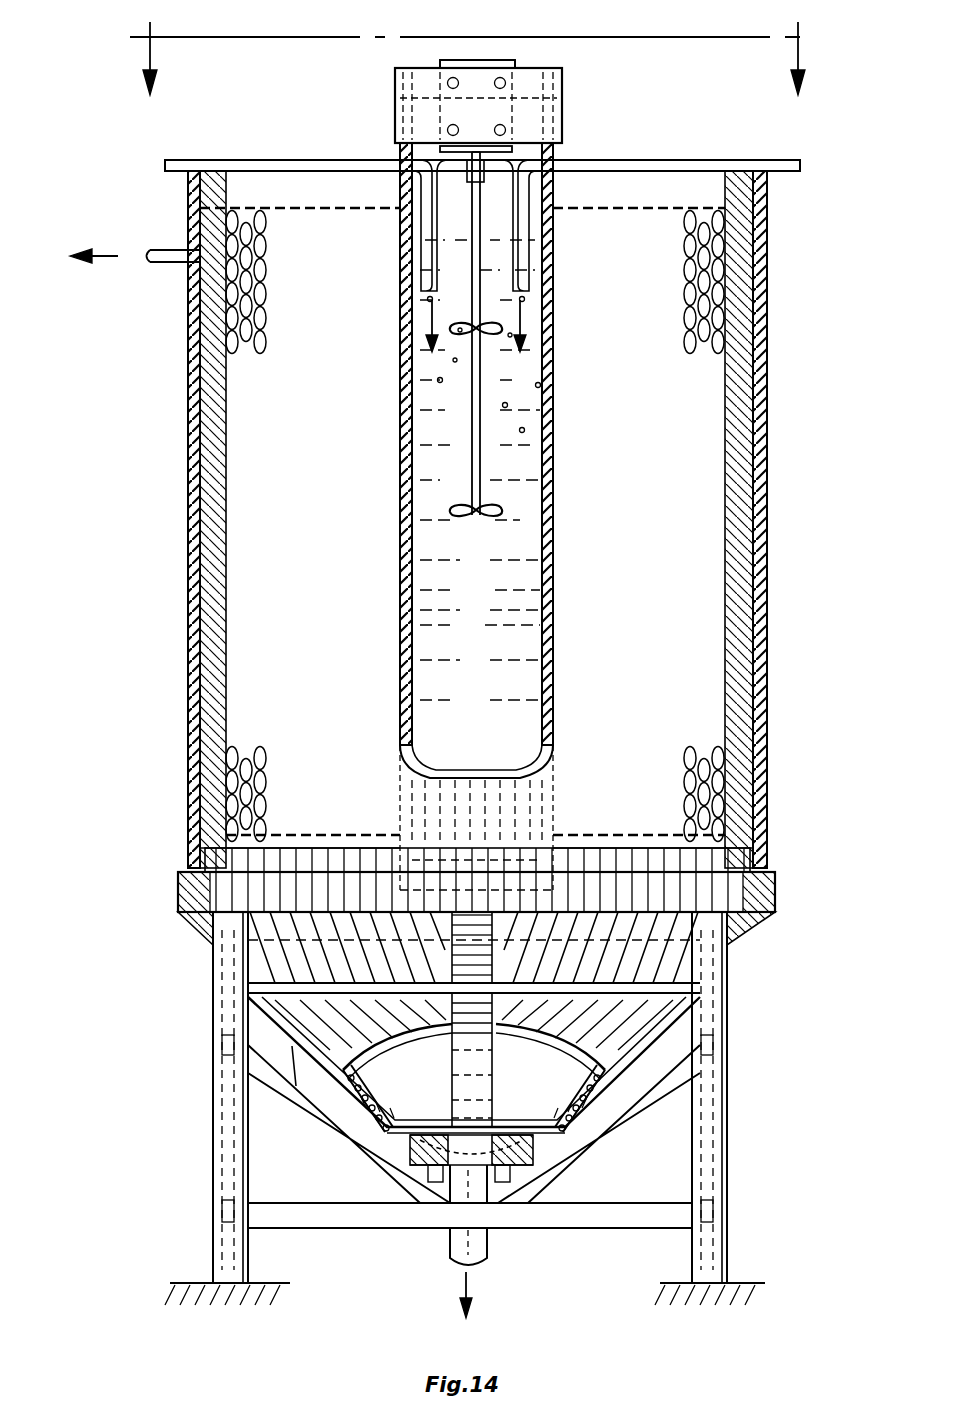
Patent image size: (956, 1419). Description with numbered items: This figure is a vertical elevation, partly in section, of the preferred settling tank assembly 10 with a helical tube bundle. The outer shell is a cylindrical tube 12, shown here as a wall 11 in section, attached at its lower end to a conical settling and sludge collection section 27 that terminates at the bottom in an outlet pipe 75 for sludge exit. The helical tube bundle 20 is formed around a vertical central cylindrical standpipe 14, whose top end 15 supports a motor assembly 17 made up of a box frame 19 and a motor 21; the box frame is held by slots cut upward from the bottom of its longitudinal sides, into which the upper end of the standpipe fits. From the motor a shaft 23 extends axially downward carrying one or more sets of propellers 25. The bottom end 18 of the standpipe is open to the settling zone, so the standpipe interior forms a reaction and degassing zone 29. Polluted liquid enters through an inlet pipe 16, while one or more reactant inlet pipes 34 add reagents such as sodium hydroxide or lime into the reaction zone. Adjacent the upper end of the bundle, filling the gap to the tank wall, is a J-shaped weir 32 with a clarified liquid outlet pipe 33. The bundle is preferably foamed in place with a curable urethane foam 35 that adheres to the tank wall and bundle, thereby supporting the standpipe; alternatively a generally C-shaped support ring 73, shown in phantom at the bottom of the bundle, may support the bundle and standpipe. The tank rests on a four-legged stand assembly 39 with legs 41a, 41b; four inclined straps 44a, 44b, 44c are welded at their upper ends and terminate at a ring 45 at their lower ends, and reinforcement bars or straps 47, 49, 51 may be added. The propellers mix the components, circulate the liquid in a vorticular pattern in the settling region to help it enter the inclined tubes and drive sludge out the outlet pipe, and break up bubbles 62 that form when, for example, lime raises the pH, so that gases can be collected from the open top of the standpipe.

The settling tank assembly 10 is at (783, 332).
The outer wall 11 is at (190, 190).
The cylindrical tube 12 is at (767, 480).
The central cylindrical standpipe 14 is at (553, 480).
The top end of standpipe 15 is at (472, 53).
The inlet pipe 16 is at (612, 171).
The motor assembly 17 is at (571, 82).
The bottom end of standpipe 18 is at (562, 892).
The box frame 19 is at (395, 80).
The helical tube bundle 20 is at (650, 602).
The motor 21 is at (488, 60).
The shaft 23 is at (472, 468).
The propellers 25 is at (496, 322).
The conical settling/sludge collection section 27 is at (428, 1092).
The reaction and degassing zone 29 is at (480, 594).
The J-shaped weir 32 is at (200, 240).
The clarified liquid outlet pipe 33 is at (178, 262).
The reactant inlet pipe 34 is at (308, 160).
The curable urethane foam 35 is at (755, 680).
The stand assembly 39 is at (742, 1100).
The leg 41a is at (727, 1010).
The leg 41b is at (213, 1008).
The inclined strap 44a is at (614, 1080).
The inclined strap 44b is at (478, 1090).
The inclined strap 44c is at (330, 1080).
The ring 45 is at (505, 1160).
The reinforcement bar 47 is at (420, 1095).
The reinforcement bar 49 is at (335, 1158).
The reinforcement bar 51 is at (362, 1228).
The bubbles 62 is at (522, 430).
The support ring 73 is at (772, 884).
The outlet pipe 75 is at (412, 1152).